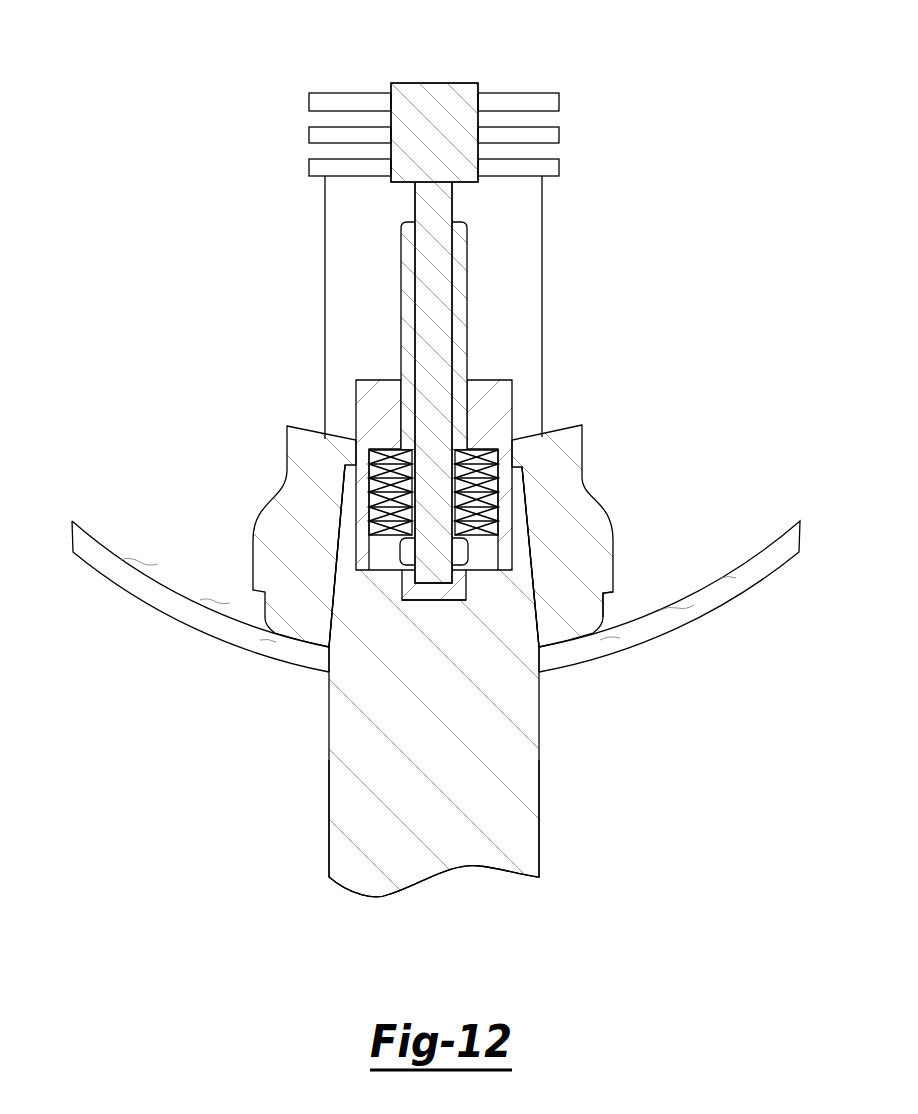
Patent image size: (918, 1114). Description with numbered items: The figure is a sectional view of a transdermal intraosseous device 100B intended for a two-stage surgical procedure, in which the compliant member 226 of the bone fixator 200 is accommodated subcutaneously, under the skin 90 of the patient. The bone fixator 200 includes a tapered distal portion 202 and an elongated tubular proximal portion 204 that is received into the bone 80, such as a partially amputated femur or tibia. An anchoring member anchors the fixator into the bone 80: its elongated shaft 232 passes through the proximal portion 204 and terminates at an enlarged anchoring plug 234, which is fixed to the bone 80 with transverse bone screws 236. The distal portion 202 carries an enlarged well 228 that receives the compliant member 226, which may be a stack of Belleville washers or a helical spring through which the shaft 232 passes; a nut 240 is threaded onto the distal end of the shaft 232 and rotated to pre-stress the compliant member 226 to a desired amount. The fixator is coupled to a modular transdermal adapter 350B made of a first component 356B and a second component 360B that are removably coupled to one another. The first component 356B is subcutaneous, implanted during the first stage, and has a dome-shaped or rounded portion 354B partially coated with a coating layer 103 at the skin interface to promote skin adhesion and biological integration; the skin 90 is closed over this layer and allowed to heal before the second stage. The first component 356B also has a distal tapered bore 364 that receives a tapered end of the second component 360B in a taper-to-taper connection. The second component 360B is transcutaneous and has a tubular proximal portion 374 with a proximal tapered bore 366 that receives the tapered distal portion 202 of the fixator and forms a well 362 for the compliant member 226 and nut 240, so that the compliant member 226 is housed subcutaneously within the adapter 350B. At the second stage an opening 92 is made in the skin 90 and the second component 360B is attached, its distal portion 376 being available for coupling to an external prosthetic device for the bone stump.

The anchoring plug 234 is at (420, 92).
The bone screws 236 is at (315, 103).
The bone 80 is at (340, 262).
The proximal portion 204 is at (460, 265).
The elongated shaft 232 is at (437, 333).
The well 228 is at (493, 468).
The bone fixator 200 is at (568, 351).
The transdermal adapter 350B is at (560, 468).
The distal portion 202 is at (368, 403).
The proximal tapered bore 366 is at (357, 492).
The tubular proximal portion 374 is at (523, 540).
The first component 356B is at (573, 558).
The compliant member 226 is at (377, 508).
The nut 240 is at (467, 550).
The skin 90 is at (740, 575).
The distal tapered bore 364 is at (337, 568).
The opening 92 is at (327, 673).
The transdermal intraosseous device 100B is at (198, 691).
The second component 360B is at (343, 739).
The distal portion 376 is at (523, 812).
The coating layer 103 is at (605, 618).
The well 362 is at (432, 584).
The rounded portion 354B is at (568, 625).